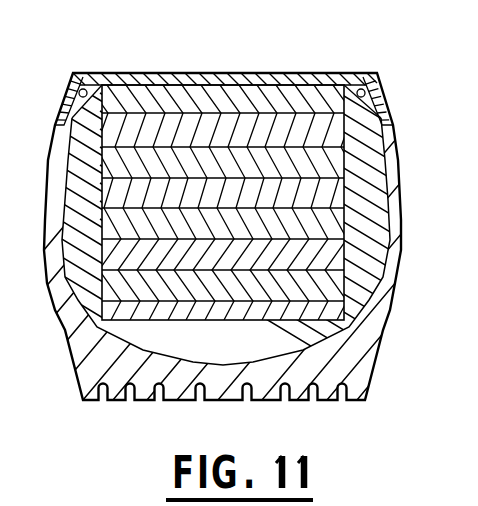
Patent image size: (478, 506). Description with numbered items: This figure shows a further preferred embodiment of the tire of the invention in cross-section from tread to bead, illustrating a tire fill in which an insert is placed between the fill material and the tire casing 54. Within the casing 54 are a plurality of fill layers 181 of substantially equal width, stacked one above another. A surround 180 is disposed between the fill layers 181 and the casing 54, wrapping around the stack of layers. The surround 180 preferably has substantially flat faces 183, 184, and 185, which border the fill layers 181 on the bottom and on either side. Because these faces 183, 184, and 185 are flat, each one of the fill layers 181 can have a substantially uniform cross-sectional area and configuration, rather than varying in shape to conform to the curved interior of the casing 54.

The casing 54 is at (47, 157).
The surround 180 is at (133, 335).
The fill layers 181 is at (262, 122).
The flat face 183 is at (308, 316).
The flat face 184 is at (345, 257).
The flat face 185 is at (100, 254).